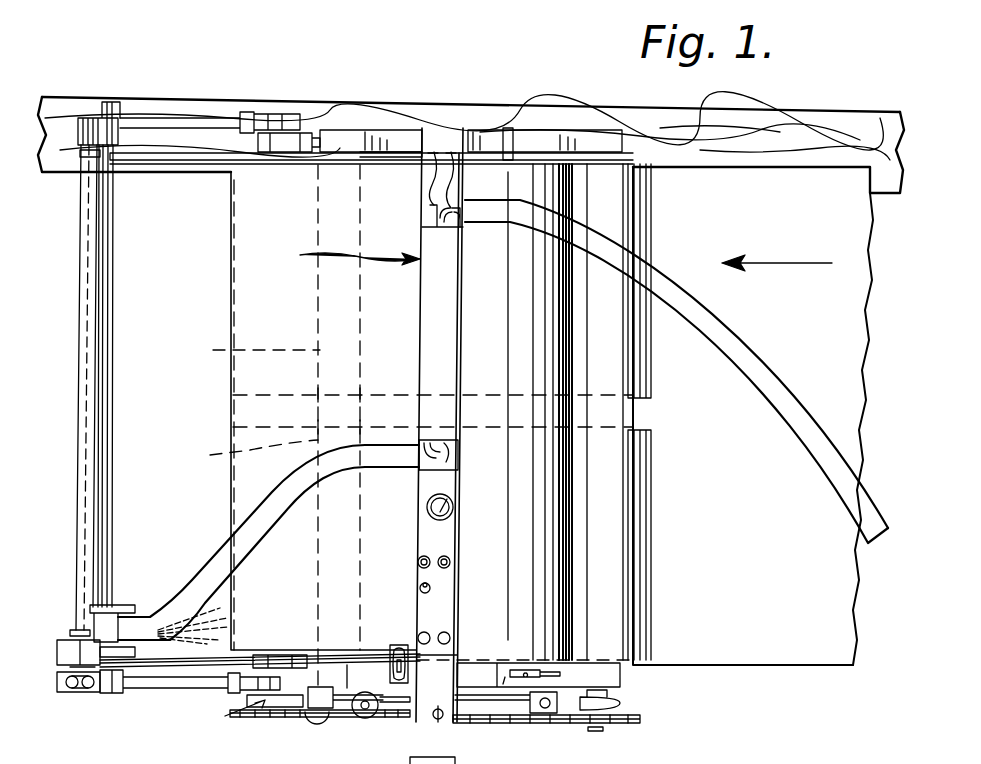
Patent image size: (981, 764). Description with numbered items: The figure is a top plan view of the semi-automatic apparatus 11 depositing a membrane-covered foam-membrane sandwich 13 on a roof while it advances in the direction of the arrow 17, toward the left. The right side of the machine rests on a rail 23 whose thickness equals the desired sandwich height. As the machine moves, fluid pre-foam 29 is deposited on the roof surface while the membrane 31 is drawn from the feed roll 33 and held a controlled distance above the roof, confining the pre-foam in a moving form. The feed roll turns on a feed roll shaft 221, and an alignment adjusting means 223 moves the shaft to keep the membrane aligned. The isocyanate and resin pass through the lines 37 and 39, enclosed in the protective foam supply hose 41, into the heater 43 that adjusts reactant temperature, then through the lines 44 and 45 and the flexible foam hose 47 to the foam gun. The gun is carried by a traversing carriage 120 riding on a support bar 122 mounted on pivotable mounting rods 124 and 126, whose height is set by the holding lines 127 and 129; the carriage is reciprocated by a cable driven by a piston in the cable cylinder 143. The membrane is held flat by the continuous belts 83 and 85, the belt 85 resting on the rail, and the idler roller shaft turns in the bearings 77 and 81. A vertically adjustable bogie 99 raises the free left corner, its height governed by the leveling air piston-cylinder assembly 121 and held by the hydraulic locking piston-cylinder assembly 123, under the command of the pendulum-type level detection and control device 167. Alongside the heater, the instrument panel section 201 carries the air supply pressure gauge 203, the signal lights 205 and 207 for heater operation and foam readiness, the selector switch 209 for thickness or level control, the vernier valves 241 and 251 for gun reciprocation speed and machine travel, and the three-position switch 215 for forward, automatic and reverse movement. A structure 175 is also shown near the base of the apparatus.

The semi-automatic apparatus 11 is at (339, 256).
The foam-membrane sandwich 13 is at (805, 682).
The arrow 17 is at (815, 268).
The rail 23 is at (792, 128).
The pre-foam 29 is at (203, 617).
The membrane 31 is at (390, 316).
The feed roll 33 is at (630, 373).
The isocyanate line 37 is at (434, 152).
The resin line 39 is at (452, 152).
The foam supply hose 41 is at (875, 510).
The heater 43 is at (435, 363).
The line 44 is at (460, 455).
The line 45 is at (628, 477).
The foam hose 47 is at (215, 530).
The bearing 77 is at (262, 655).
The bearing 81 is at (313, 132).
The continuous belt 83 is at (240, 453).
The continuous belt 85 is at (245, 352).
The bogie 99 is at (220, 732).
The traversing carriage 120 is at (122, 605).
The leveling air piston-cylinder assembly 121 is at (305, 722).
The support bar 122 is at (104, 368).
The hydraulic locking piston-cylinder assembly 123 is at (360, 718).
The pivotable mounting rod 124 is at (127, 688).
The pivotable mounting rod 126 is at (183, 112).
The holding line 127 is at (140, 667).
The holding line 129 is at (150, 163).
The cable cylinder 143 is at (87, 418).
The level detection and control device 167 is at (390, 655).
The base box 175 is at (462, 754).
The instrument panel section 201 is at (418, 483).
The air supply pressure gauge 203 is at (427, 514).
The signal light 205 is at (418, 560).
The signal light 207 is at (446, 556).
The selector switch 209 is at (420, 588).
The switch 215 is at (440, 722).
The feed roll shaft 221 is at (515, 140).
The alignment adjusting means 223 is at (530, 675).
The vernier valve 241 is at (418, 636).
The vernier valve 251 is at (446, 632).